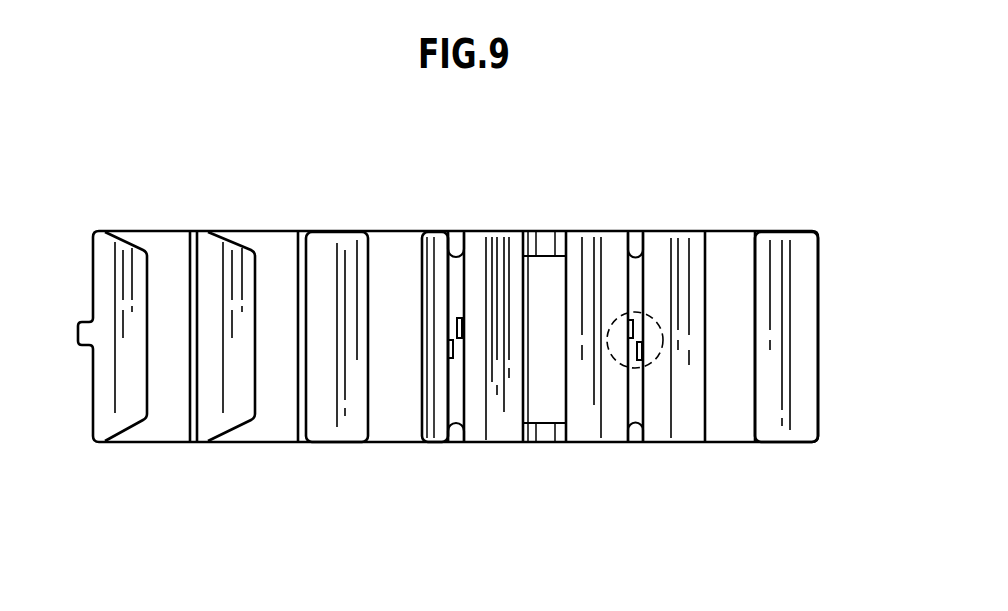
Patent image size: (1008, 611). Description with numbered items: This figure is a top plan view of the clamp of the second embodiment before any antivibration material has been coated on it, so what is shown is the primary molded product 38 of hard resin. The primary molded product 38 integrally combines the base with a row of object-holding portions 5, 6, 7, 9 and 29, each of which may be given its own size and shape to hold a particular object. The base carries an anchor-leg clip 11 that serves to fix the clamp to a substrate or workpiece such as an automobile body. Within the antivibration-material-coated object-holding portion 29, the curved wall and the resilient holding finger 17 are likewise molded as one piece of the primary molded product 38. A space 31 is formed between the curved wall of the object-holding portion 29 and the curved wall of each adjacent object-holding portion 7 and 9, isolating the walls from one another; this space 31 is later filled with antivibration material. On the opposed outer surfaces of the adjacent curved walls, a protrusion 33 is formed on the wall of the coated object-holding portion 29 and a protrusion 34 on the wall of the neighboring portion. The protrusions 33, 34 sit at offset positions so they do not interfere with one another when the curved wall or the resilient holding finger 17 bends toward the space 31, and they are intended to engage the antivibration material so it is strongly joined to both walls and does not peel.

The object-holding portion 5 is at (168, 222).
The object-holding portion 6 is at (285, 222).
The object-holding portion 7 is at (395, 222).
The object-holding portion 9 is at (737, 222).
The anchor-leg clip 11 is at (647, 318).
The resilient holding finger 17 is at (108, 258).
The antivibration-material-coated object-holding portion 29 is at (545, 222).
The space 31 is at (452, 407).
The protrusion 33 is at (462, 332).
The protrusion 34 is at (447, 348).
The primary molded product 38 is at (840, 307).